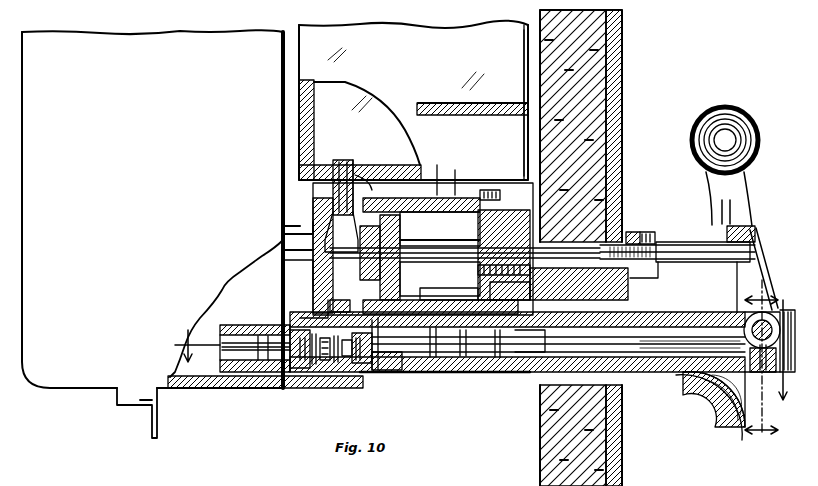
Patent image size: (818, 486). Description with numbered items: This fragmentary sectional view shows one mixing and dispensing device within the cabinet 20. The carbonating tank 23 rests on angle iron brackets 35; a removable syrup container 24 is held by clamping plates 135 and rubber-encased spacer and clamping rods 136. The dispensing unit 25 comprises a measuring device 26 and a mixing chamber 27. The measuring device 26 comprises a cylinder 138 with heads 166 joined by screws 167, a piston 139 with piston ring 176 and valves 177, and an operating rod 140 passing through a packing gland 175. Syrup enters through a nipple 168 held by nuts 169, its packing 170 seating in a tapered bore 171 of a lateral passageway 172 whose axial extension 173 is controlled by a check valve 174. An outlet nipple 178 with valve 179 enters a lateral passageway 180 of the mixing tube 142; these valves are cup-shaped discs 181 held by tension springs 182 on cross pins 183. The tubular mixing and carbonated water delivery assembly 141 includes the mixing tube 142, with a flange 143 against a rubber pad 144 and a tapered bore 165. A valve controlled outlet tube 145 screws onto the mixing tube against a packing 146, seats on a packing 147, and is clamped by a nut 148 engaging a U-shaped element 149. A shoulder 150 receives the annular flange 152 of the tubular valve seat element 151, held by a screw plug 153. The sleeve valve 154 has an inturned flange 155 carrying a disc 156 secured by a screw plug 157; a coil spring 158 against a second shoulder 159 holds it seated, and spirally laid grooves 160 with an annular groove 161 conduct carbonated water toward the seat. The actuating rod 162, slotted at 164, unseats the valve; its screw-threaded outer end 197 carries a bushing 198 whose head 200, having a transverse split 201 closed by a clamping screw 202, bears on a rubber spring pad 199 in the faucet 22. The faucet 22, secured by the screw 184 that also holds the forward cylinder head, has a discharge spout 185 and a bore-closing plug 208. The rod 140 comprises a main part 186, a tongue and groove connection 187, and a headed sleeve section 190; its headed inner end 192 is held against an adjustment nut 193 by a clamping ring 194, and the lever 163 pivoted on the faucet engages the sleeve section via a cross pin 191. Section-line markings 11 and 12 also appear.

The carbonating tank 23 is at (130, 40).
The angle iron brackets 35 is at (150, 424).
The syrup tank 24 is at (385, 38).
The clamping plates 135 is at (306, 62).
The spacer and clamping rods 136 is at (452, 104).
The discharge spout 185 is at (528, 92).
The cabinet 20 is at (632, 58).
The faucet 22 is at (728, 108).
The main part of operating rod 186 is at (622, 152).
The tongue and groove connection 187 is at (600, 222).
The adjustment nut 193 is at (634, 232).
The clamping ring 194 is at (658, 238).
The lever 163 is at (727, 232).
The cross pin 191 is at (768, 246).
The measuring device 26 is at (455, 166).
The cylinder 138 is at (445, 185).
The screws 167 is at (482, 190).
The piston ring 176 is at (388, 148).
The nuts 169 is at (360, 168).
The nipple 168 is at (342, 166).
The piston 139 is at (400, 175).
The cylinder heads 166 is at (368, 210).
The check valve 174 is at (414, 210).
The tapered bore 171 is at (314, 200).
The packing 170 is at (324, 222).
The axial extension 173 is at (272, 230).
The lateral passageway 172 is at (283, 230).
The screw plug 157 is at (262, 244).
The contact disc 156 is at (308, 252).
The inturned annular flange 155 is at (300, 310).
The cup-shaped discs 181 is at (440, 229).
The valves 177 is at (440, 228).
The operating rod 140 is at (434, 246).
The cross pins 183 is at (430, 276).
The tension springs 182 is at (420, 282).
The packing gland 175 is at (449, 293).
The outlet nipple 178 is at (506, 276).
The valve 179 is at (510, 303).
The screw 184 is at (628, 284).
The headed inner end 192 is at (632, 260).
The headed sleeve section 190 is at (712, 262).
The bushing 198 is at (737, 290).
The screw-threaded outer end 197 is at (750, 316).
The plug 208 is at (770, 310).
The transverse split 201 is at (758, 356).
The clamping screw 202 is at (780, 358).
The section line 12 is at (767, 358).
The section line 11 is at (484, 360).
The U-shaped element 149 is at (255, 320).
The nut 148 is at (245, 326).
The second shoulder 159 is at (245, 388).
The coil spring 158 is at (255, 390).
The annular groove 161 is at (266, 392).
The packing 147 is at (282, 386).
The valve 154 is at (300, 392).
The spirally laid grooves 160 is at (312, 392).
The valve controlled outlet tube 145 is at (322, 384).
The shoulder 150 is at (336, 392).
The annular flange 152 is at (355, 384).
The screw plug 153 is at (368, 392).
The packing 146 is at (378, 384).
The slot 164 is at (400, 376).
The actuating rod 162 is at (410, 392).
The dispensing unit 25 is at (445, 372).
The mixing chamber 27 is at (485, 372).
The mixing tube 142 is at (455, 380).
The lateral passageway 180 is at (450, 380).
The flange 143 is at (518, 376).
The rubber pad 144 is at (545, 372).
The bore 165 is at (652, 378).
The valve seat element 151 is at (337, 312).
The mixing and carbonated water delivery assembly 141 is at (325, 308).
The rubber spring pad 199 is at (700, 392).
The head 200 is at (700, 410).